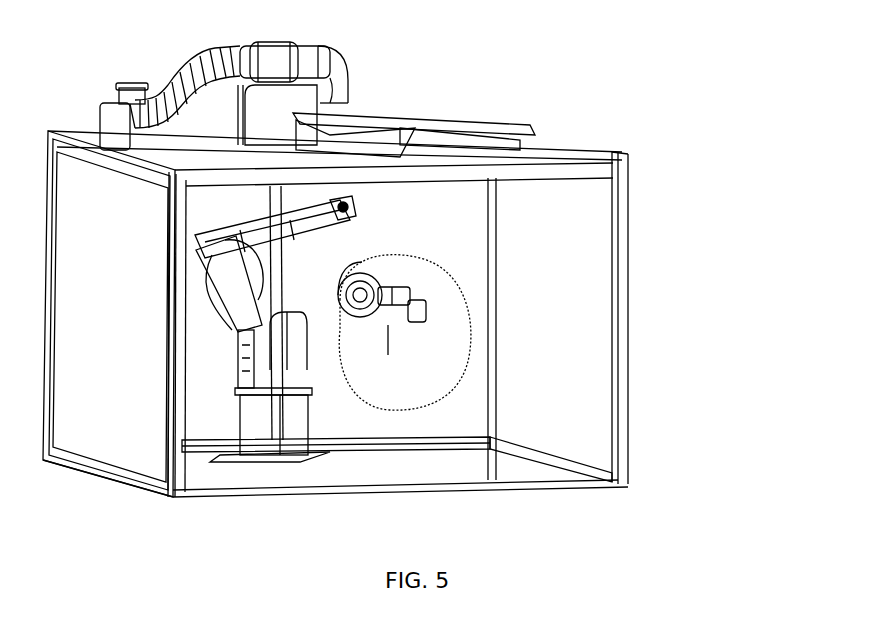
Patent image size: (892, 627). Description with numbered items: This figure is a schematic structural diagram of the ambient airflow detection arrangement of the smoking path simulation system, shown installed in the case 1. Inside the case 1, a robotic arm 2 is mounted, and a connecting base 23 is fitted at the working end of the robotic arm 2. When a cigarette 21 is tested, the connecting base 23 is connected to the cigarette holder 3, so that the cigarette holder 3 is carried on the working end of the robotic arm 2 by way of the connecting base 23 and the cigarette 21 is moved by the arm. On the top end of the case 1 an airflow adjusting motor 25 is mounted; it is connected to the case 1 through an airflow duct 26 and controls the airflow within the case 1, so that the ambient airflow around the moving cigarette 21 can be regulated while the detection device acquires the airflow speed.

The case 1 is at (513, 243).
The robotic arm 2 is at (307, 392).
The cigarette holder 3 is at (410, 308).
The cigarette 21 is at (425, 323).
The connecting base 23 is at (385, 293).
The airflow adjusting motor 25 is at (130, 118).
The airflow duct 26 is at (340, 100).